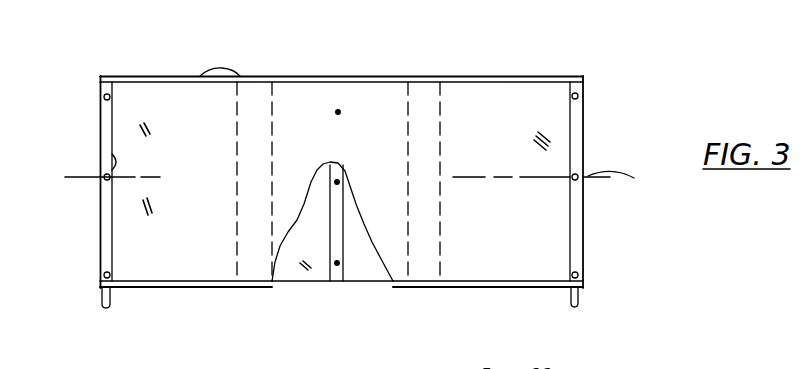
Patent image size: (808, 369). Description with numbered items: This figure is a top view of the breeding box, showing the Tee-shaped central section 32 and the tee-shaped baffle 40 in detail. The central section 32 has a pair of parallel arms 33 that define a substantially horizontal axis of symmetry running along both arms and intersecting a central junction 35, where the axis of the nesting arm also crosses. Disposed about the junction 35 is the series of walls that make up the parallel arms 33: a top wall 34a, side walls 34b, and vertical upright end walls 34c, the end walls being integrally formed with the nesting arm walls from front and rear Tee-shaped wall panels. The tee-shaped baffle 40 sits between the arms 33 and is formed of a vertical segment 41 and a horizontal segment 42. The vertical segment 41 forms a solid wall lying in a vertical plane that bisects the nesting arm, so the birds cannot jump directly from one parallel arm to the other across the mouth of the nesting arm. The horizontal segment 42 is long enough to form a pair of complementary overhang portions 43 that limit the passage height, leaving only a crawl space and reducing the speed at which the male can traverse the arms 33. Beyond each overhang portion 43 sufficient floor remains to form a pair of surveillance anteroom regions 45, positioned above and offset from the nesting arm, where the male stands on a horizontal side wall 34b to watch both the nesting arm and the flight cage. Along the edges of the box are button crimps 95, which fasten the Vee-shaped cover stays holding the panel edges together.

The Tee-shaped central section 32 is at (606, 129).
The parallel arms 33 is at (594, 271).
The top wall 34a is at (144, 208).
The side walls 34b is at (202, 80).
The end walls 34c is at (110, 160).
The central junction 35 is at (338, 180).
The tee-shaped baffle 40 is at (320, 275).
The vertical segment 41 is at (344, 250).
The horizontal segment 42 is at (300, 269).
The overhang portions 43 is at (245, 233).
The surveillance anteroom regions 45 is at (138, 130).
The button crimps 95 is at (580, 270).